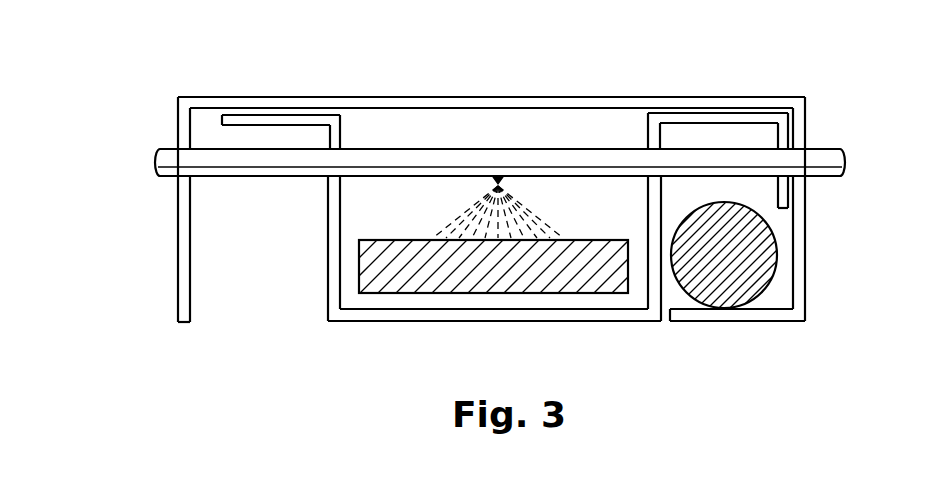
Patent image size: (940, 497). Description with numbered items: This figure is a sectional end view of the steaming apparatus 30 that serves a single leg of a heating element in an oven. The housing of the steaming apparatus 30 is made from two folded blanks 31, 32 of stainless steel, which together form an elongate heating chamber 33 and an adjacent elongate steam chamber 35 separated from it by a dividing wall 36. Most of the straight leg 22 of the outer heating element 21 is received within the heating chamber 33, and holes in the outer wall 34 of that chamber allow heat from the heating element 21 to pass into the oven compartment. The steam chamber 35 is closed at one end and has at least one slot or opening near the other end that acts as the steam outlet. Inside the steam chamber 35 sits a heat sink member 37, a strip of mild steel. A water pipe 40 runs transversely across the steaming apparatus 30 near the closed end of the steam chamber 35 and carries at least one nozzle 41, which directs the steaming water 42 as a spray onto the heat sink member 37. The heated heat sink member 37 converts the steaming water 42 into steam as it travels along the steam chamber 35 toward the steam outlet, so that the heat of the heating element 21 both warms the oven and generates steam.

The steaming apparatus 30 is at (526, 197).
The folded blank 31 is at (402, 105).
The steam chamber 35 is at (550, 118).
The heating chamber 33 is at (745, 128).
The outer wall 34 is at (800, 210).
The water pipe 40 is at (170, 158).
The nozzle 41 is at (490, 183).
The steaming water 42 is at (550, 222).
The heat sink member 37 is at (418, 280).
The folded blank 32 is at (500, 317).
The dividing wall 36 is at (652, 285).
The straight leg 22 is at (768, 262).
The outer heating element 21 is at (767, 293).